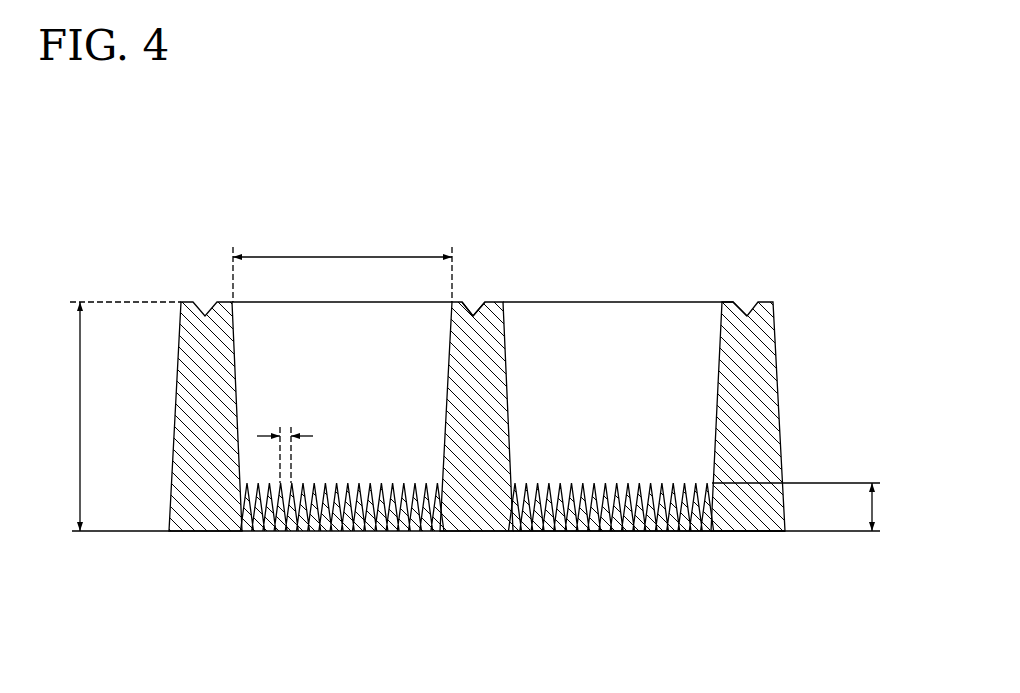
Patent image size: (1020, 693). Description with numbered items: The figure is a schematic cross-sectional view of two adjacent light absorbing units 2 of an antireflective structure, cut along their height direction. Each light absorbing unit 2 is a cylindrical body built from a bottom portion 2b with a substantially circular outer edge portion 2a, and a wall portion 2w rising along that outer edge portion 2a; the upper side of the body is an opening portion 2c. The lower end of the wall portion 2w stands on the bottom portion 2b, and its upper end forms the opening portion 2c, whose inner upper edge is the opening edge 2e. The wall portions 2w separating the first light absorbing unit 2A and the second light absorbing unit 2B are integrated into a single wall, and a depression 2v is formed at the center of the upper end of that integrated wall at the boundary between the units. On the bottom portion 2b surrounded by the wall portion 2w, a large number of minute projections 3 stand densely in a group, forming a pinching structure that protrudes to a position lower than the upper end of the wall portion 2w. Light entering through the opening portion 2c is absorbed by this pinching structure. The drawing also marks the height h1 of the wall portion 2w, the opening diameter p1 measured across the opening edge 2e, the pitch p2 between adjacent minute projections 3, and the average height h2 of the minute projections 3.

The light absorbing unit 2 is at (476, 387).
The first light absorbing unit 2A is at (342, 387).
The second light absorbing unit 2B is at (644, 377).
The wall portion 2w is at (178, 360).
The depression 2v is at (474, 316).
The opening portion 2c is at (657, 290).
The opening edge 2e is at (731, 302).
The outer edge portion 2a is at (715, 543).
The bottom portion 2b is at (595, 543).
The minute projections 3 is at (373, 531).
The opening diameter p1 is at (342, 264).
The pitch of minute projections p2 is at (285, 439).
The height of wall portion h1 is at (113, 416).
The average height of minute projections h2 is at (811, 507).